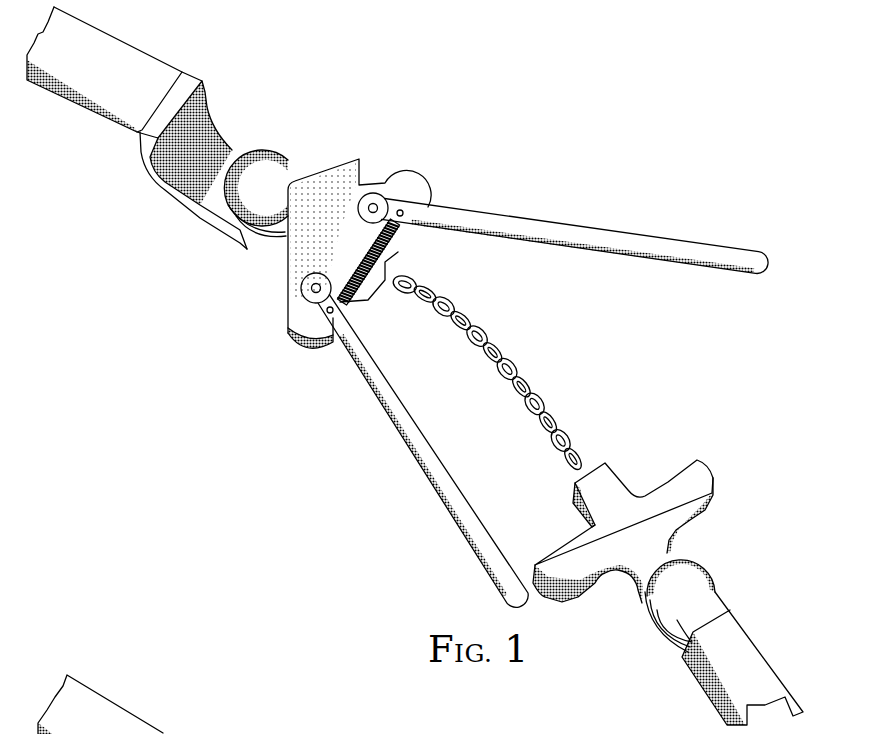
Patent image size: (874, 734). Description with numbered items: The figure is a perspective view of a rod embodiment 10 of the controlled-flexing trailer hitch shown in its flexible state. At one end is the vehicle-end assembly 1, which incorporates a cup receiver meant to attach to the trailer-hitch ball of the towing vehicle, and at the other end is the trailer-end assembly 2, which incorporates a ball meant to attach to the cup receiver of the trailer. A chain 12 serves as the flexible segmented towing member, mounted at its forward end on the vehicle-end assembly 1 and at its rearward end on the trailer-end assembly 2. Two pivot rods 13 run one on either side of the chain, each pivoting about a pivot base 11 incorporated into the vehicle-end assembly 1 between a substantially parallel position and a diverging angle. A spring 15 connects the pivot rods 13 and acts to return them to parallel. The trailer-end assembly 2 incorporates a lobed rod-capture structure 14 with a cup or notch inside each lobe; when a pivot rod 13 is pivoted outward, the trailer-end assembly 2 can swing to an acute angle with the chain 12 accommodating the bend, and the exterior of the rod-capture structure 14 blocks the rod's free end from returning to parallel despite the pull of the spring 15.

The rod embodiment 10 is at (668, 68).
The vehicle-end assembly 1 is at (368, 128).
The trailer-end assembly 2 is at (637, 643).
The pivot base 11 is at (408, 182).
The chain 12 is at (507, 348).
The pivot rod 13 is at (490, 220).
The rod-capture structure 14 is at (692, 473).
The spring 15 is at (402, 237).